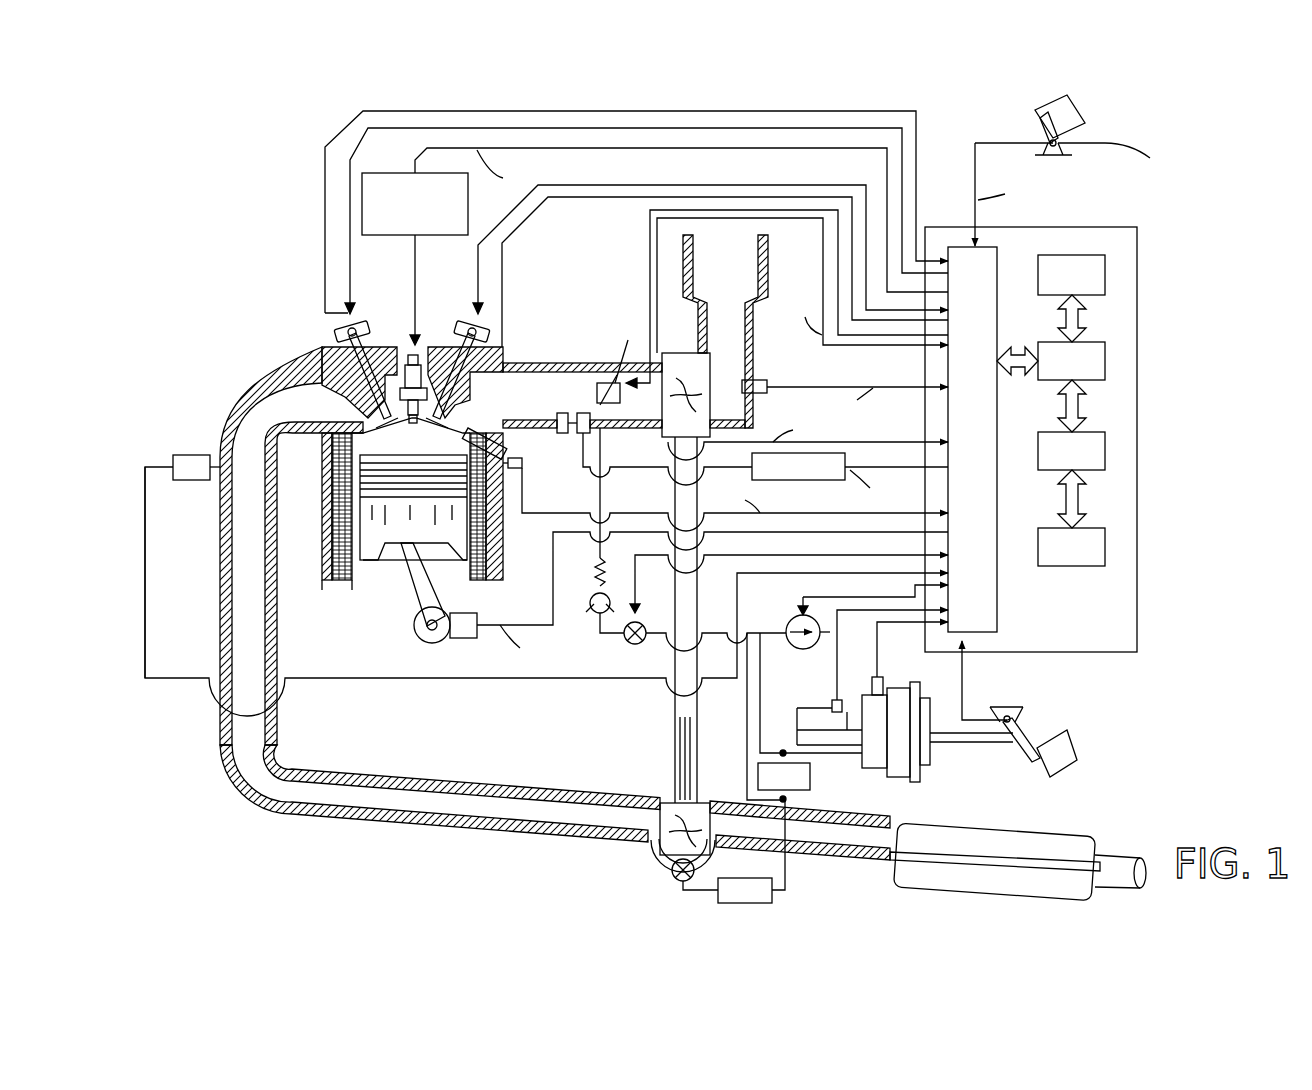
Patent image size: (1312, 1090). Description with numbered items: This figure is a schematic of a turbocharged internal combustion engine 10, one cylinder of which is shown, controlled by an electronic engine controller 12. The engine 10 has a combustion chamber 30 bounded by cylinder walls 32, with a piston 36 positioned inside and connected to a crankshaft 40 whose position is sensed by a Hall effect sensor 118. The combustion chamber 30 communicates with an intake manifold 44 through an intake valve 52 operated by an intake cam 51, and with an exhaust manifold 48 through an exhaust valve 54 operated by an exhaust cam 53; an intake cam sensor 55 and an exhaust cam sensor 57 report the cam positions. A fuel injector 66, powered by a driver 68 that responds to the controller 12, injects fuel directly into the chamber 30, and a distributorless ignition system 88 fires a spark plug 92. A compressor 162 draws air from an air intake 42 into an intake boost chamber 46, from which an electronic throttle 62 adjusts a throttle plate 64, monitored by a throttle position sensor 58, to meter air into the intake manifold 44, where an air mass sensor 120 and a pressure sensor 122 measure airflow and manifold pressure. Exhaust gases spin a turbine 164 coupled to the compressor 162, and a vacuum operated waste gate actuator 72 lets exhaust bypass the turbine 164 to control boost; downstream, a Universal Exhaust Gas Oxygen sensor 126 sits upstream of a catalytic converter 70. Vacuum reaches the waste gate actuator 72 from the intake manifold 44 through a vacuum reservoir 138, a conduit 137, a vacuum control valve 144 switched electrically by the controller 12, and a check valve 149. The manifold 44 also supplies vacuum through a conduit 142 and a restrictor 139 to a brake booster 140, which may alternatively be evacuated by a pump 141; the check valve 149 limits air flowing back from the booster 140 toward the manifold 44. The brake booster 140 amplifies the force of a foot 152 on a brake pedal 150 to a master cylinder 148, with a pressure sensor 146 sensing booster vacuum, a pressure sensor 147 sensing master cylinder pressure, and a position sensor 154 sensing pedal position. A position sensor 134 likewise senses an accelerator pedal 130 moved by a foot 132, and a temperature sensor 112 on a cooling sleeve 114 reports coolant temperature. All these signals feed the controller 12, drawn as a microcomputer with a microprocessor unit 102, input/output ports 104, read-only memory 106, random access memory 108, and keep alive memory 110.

The internal combustion engine 10 is at (258, 300).
The electronic engine controller 12 is at (1137, 227).
The combustion chamber 30 is at (325, 545).
The cylinder walls 32 is at (360, 588).
The piston 36 is at (397, 545).
The crankshaft 40 is at (422, 640).
The air intake 42 is at (714, 279).
The intake manifold 44 is at (521, 409).
The intake boost chamber 46 is at (628, 421).
The exhaust manifold 48 is at (278, 416).
The intake cam 51 is at (472, 312).
The intake valve 52 is at (470, 400).
The exhaust cam 53 is at (356, 314).
The exhaust valve 54 is at (320, 380).
The intake cam sensor 55 is at (485, 338).
The exhaust cam sensor 57 is at (343, 336).
The throttle position sensor 58 is at (629, 348).
The electronic throttle 62 is at (592, 368).
The throttle plate 64 is at (607, 380).
The fuel injector 66 is at (513, 447).
The driver 68 is at (845, 480).
The catalytic converter 70 is at (897, 880).
The vacuum operated waste gate actuator 72 is at (672, 876).
The distributorless ignition system 88 is at (378, 174).
The spark plug 92 is at (418, 345).
The microprocessor unit 102 is at (1105, 357).
The input/output ports 104 is at (998, 255).
The read-only memory 106 is at (1105, 272).
The random access memory 108 is at (1105, 450).
The keep alive memory 110 is at (1105, 545).
The temperature sensor 112 is at (520, 470).
The cooling sleeve 114 is at (500, 550).
The Hall effect sensor 118 is at (462, 640).
The air mass sensor 120 is at (767, 383).
The pressure sensor 122 is at (578, 413).
The Universal Exhaust Gas Oxygen sensor 126 is at (175, 455).
The accelerator pedal 130 is at (1032, 122).
The foot 132 is at (1090, 105).
The position sensor 134 is at (1150, 158).
The conduit 137 is at (745, 715).
The vacuum reservoir 138 is at (731, 902).
The restrictor 139 is at (770, 788).
The brake booster 140 is at (900, 688).
The pump 141 is at (792, 650).
The conduit 142 is at (603, 512).
The vacuum control valve 144 is at (635, 645).
The pressure sensor 146 is at (880, 677).
The pressure sensor 147 is at (838, 700).
The master cylinder 148 is at (800, 708).
The check valve 149 is at (592, 600).
The brake pedal 150 is at (1030, 768).
The foot 152 is at (1060, 738).
The position sensor 154 is at (1000, 712).
The compressor 162 is at (683, 353).
The turbine 164 is at (668, 803).